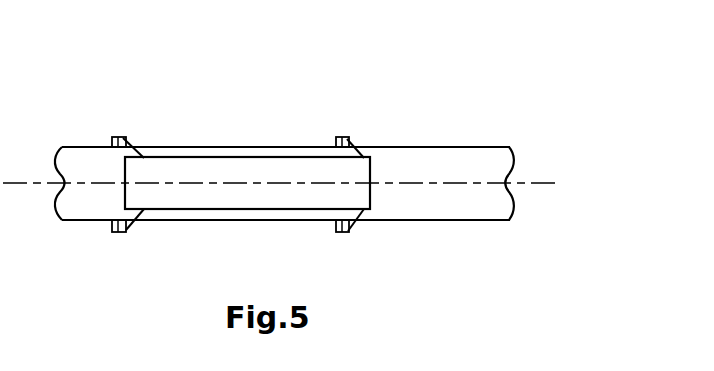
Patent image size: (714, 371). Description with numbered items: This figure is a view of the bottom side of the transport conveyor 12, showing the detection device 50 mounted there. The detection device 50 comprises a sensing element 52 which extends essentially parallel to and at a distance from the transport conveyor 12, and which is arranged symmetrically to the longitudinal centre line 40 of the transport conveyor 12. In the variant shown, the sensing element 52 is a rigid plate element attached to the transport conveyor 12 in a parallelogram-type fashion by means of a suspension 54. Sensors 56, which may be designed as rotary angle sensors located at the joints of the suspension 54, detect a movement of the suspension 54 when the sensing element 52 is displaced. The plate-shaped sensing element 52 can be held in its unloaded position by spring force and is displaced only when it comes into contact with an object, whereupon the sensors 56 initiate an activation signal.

The transport conveyor 12 is at (448, 166).
The longitudinal centre line 40 is at (537, 183).
The detection device 50 is at (254, 104).
The sensing element 52 is at (283, 173).
The suspension 54 is at (140, 147).
The sensor 56 is at (117, 137).